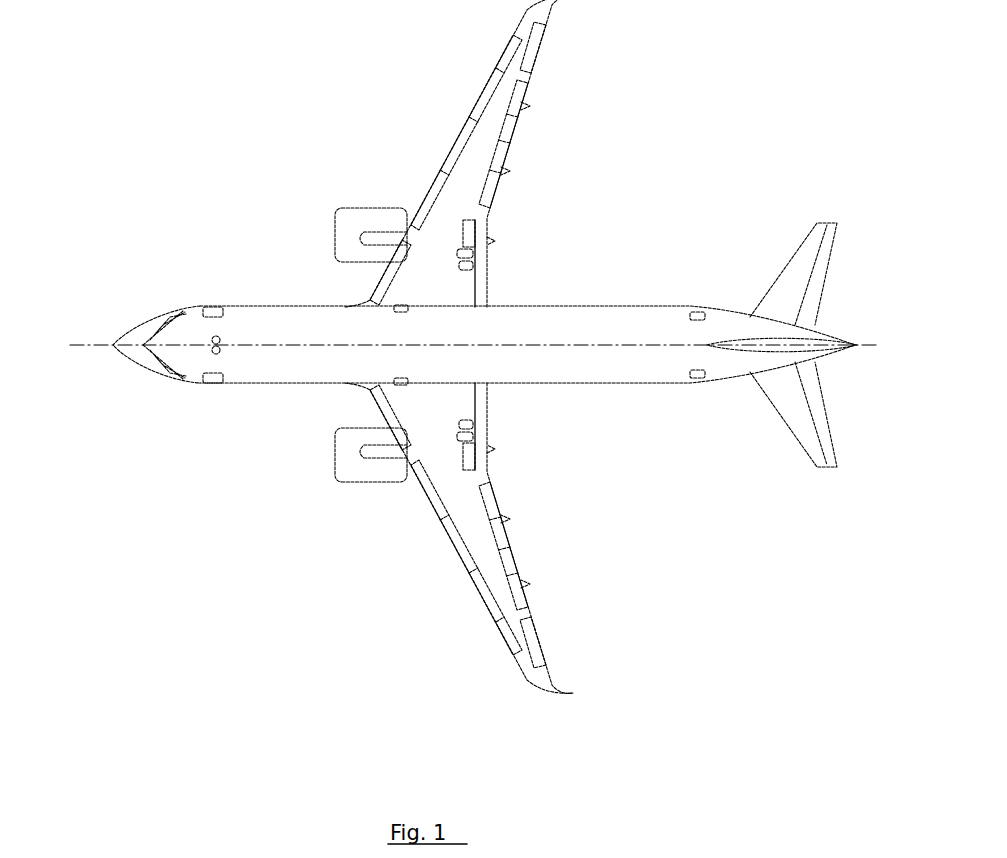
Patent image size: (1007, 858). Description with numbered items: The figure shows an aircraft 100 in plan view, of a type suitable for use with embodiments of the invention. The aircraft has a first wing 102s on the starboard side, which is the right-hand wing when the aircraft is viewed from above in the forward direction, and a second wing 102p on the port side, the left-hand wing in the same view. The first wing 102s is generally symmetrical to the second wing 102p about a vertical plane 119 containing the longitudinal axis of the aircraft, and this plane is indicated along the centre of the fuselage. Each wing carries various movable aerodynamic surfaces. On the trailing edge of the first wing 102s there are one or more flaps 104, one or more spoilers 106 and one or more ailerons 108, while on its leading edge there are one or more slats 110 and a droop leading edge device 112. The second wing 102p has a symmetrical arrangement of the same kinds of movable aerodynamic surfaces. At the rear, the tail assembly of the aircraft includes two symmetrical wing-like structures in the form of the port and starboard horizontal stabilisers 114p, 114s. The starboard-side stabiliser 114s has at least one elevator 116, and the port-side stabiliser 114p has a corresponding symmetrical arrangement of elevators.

The aircraft 100 is at (208, 133).
The first wing 102s is at (405, 298).
The second wing 102p is at (447, 475).
The flaps 104 is at (483, 245).
The spoilers 106 is at (482, 193).
The ailerons 108 is at (537, 52).
The slats 110 is at (508, 52).
The droop leading edge device 112 is at (390, 272).
The starboard horizontal stabiliser 114s is at (808, 250).
The port horizontal stabiliser 114p is at (813, 447).
The elevator 116 is at (817, 285).
The vertical plane 119 is at (90, 337).